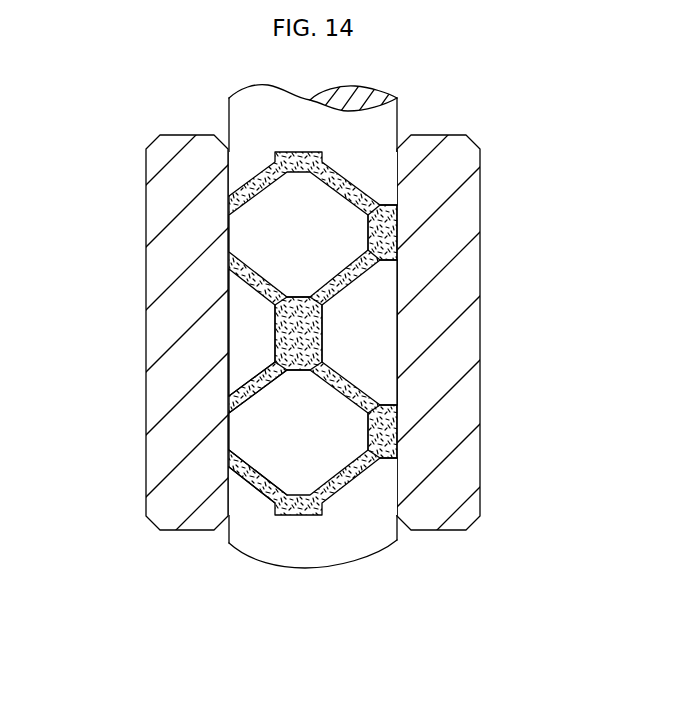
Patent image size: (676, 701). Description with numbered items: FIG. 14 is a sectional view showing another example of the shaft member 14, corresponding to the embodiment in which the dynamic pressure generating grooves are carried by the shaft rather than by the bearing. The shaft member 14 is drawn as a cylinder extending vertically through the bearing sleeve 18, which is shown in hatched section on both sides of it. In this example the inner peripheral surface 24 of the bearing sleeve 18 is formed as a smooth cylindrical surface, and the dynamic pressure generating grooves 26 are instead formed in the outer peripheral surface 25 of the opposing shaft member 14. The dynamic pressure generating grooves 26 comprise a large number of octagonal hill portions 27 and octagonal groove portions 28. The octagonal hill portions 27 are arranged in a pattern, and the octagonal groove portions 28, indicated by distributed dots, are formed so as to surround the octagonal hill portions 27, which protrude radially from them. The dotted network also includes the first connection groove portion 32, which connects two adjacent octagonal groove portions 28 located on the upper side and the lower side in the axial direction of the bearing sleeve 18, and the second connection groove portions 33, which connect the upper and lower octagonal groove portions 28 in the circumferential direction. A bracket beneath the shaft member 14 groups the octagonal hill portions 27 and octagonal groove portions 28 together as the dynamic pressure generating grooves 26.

The shaft member 14 is at (402, 114).
The bearing sleeve 18 is at (496, 231).
The inner peripheral surface 24 is at (398, 327).
The outer peripheral surface 25 is at (233, 388).
The dynamic pressure generating grooves 26 is at (345, 605).
The octagonal hill portions 27 is at (317, 457).
The octagonal groove portions 28 is at (255, 491).
The first connection groove portion 32 is at (297, 323).
The second connection groove portion 33 is at (392, 208).